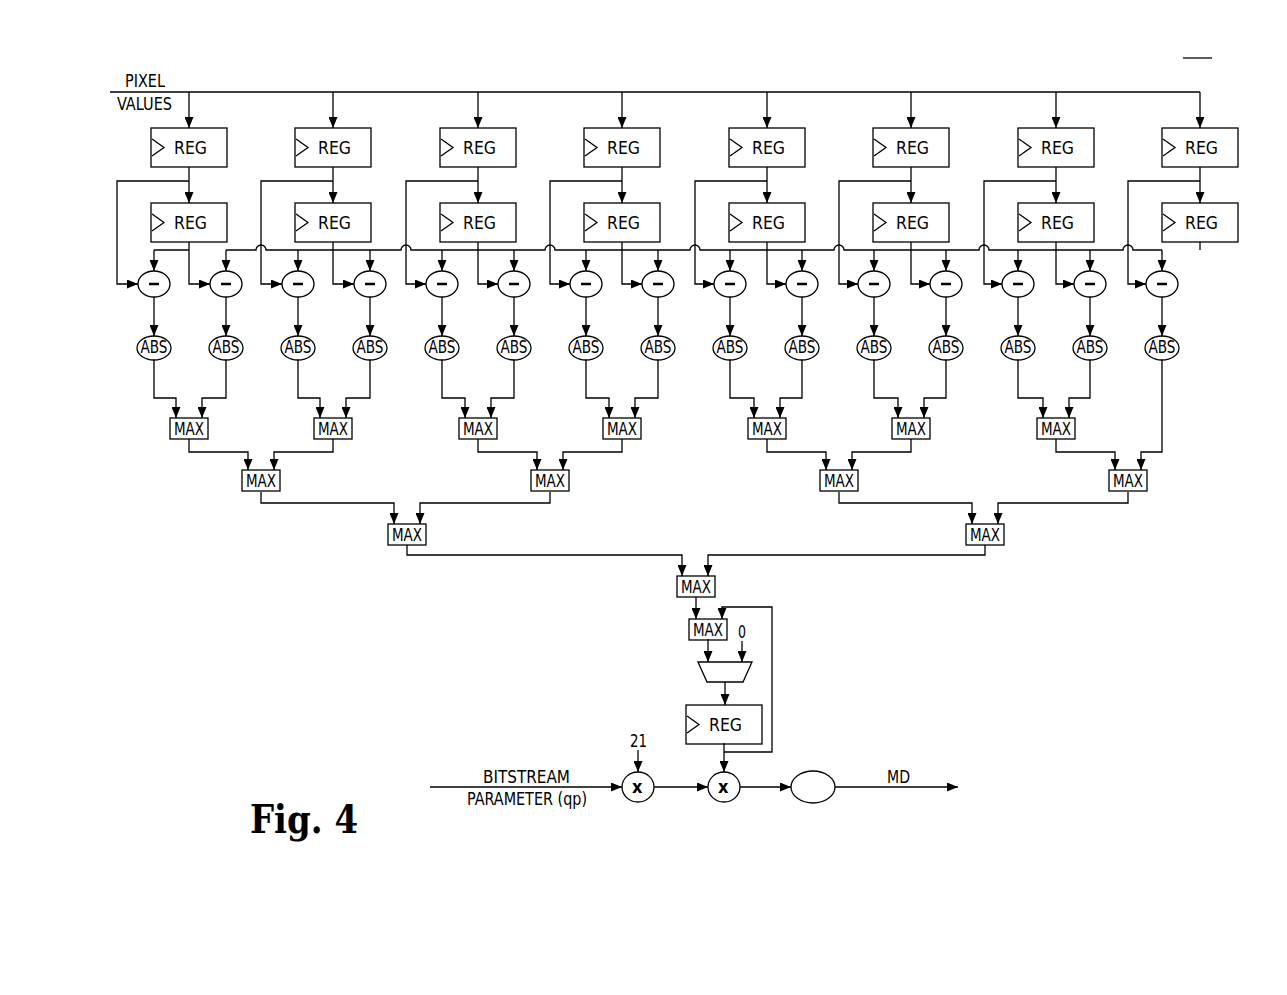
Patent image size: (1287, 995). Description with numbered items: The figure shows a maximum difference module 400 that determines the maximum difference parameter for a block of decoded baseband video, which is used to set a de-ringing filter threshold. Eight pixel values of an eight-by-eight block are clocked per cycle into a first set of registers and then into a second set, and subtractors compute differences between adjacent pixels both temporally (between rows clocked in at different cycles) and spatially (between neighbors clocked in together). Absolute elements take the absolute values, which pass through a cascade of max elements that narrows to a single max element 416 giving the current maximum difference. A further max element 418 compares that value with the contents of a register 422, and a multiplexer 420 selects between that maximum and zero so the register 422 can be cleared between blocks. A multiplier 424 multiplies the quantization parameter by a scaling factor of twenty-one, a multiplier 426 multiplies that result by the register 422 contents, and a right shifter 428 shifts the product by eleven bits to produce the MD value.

The maximum difference module 400 is at (1197, 48).
The maximum difference element 416 is at (676, 587).
The maximum difference element 418 is at (689, 630).
The multiplexer 420 is at (700, 674).
The register 422 is at (686, 712).
The multiplier 424 is at (638, 802).
The multiplier 426 is at (724, 802).
The right shifter 428 is at (810, 803).